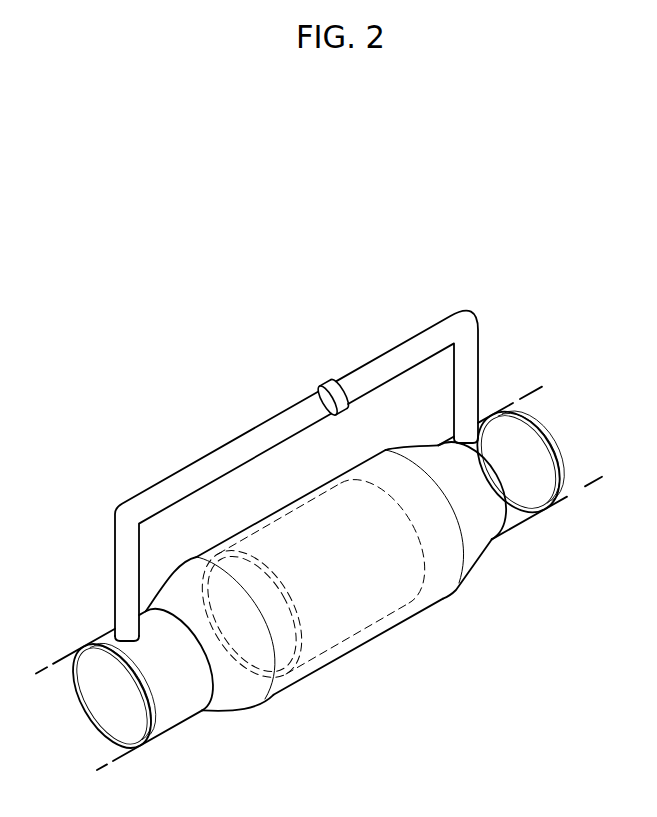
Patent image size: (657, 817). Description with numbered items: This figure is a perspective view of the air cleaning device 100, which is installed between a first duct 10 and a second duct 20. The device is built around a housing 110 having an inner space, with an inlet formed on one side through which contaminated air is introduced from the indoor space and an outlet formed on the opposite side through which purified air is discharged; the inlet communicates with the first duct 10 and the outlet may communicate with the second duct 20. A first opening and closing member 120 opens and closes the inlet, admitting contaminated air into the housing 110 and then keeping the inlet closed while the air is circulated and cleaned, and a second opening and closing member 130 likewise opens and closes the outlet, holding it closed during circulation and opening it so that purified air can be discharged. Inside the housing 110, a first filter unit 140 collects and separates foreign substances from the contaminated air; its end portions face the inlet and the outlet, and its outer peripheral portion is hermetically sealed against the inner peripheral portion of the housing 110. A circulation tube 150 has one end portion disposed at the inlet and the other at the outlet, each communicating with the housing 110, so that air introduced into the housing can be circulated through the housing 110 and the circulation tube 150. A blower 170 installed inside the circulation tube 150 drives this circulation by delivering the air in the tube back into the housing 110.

The air cleaning device 100 is at (206, 404).
The first duct 10 is at (70, 662).
The second duct 20 is at (520, 394).
The housing 110 is at (420, 452).
The first opening and closing member 120 is at (90, 706).
The second opening and closing member 130 is at (555, 492).
The first filter unit 140 is at (367, 639).
The circulation tube 150 is at (386, 352).
The blower 170 is at (326, 382).